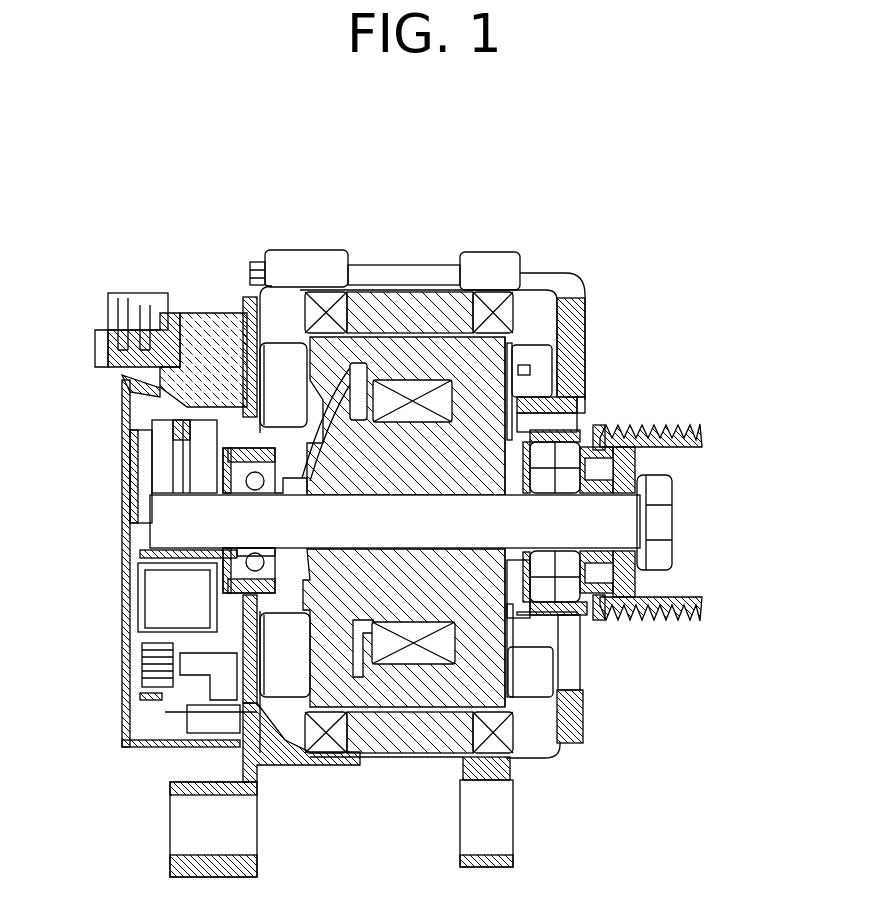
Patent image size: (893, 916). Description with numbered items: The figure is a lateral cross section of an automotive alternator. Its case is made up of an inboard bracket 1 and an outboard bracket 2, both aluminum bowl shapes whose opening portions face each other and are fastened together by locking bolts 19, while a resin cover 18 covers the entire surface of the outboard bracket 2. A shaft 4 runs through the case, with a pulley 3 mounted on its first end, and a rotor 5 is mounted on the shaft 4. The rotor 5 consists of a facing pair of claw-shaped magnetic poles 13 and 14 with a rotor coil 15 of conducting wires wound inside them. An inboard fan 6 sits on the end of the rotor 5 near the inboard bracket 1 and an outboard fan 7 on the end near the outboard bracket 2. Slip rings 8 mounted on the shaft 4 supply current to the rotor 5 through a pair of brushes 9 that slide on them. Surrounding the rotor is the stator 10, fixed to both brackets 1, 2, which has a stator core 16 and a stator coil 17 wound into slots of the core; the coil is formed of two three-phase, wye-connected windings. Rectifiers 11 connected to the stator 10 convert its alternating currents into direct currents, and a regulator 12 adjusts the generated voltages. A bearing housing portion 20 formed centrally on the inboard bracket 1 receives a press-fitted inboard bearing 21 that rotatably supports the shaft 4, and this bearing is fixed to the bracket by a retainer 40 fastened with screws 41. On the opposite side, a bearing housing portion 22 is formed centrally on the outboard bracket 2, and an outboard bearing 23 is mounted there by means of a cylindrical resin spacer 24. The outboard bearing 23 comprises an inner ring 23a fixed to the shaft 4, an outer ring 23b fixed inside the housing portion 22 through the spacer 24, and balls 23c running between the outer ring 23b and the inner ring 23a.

The inboard bracket 1 is at (584, 300).
The outboard bracket 2 is at (238, 615).
The pulley 3 is at (683, 426).
The shaft 4 is at (567, 747).
The rotor 5 is at (440, 690).
The inboard fan 6 is at (542, 355).
The outboard fan 7 is at (292, 680).
The slip rings 8 is at (153, 497).
The brushes 9 is at (155, 440).
The stator 10 is at (445, 268).
The rectifiers 11 is at (205, 722).
The regulator 12 is at (222, 332).
The claw-shaped magnetic pole 13 is at (392, 350).
The claw-shaped magnetic pole 14 is at (493, 398).
The rotor coil 15 is at (410, 655).
The stator core 16 is at (452, 298).
The stator coil 17 is at (507, 320).
The resin cover 18 is at (121, 498).
The locking bolts 19 is at (418, 292).
The bearing housing portion 20 is at (583, 610).
The inboard bearing 21 is at (635, 593).
The bearing housing portion 22 is at (217, 575).
The outboard bearing 23 is at (148, 467).
The inner ring 23a is at (237, 548).
The outer ring 23b is at (291, 558).
The balls 23c is at (284, 490).
The spacer 24 is at (160, 703).
The retainer 40 is at (525, 608).
The screws 41 is at (580, 414).